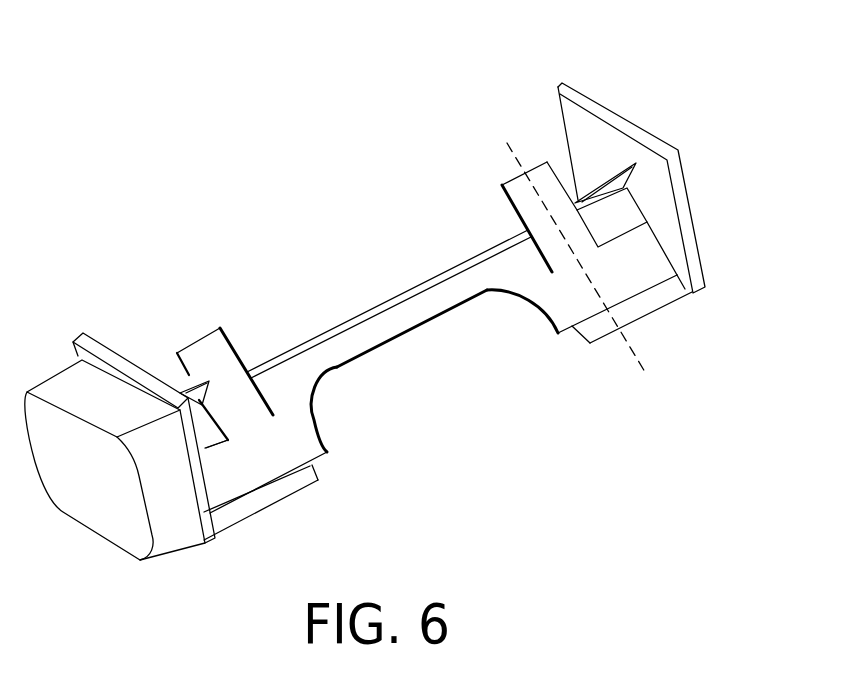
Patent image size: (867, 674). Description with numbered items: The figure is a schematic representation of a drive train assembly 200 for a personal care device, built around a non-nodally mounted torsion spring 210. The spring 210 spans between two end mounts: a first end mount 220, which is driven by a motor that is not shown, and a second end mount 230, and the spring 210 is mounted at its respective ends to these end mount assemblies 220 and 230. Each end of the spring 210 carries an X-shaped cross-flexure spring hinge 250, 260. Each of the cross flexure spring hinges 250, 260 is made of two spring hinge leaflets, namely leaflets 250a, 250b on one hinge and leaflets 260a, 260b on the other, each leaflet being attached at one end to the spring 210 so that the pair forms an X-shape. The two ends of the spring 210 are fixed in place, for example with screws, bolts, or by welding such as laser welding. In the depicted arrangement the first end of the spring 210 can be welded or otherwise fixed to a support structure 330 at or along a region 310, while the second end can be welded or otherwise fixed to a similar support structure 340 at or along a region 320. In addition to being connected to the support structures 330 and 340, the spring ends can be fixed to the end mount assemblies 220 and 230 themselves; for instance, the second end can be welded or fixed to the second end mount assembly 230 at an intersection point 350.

The drive train assembly 200 is at (142, 100).
The torsion spring 210 is at (386, 302).
The first end mount 220 is at (78, 340).
The second end mount 230 is at (567, 84).
The cross-flexure spring hinge 250 is at (552, 333).
The spring hinge leaflet 250a is at (502, 186).
The spring hinge leaflet 250b is at (587, 203).
The cross-flexure spring hinge 260 is at (333, 418).
The spring hinge leaflet 260a is at (208, 334).
The spring hinge leaflet 260b is at (192, 398).
The region 310 is at (240, 487).
The region 320 is at (662, 282).
The support structure 330 is at (303, 492).
The support structure 340 is at (590, 334).
The intersection point 350 is at (665, 250).